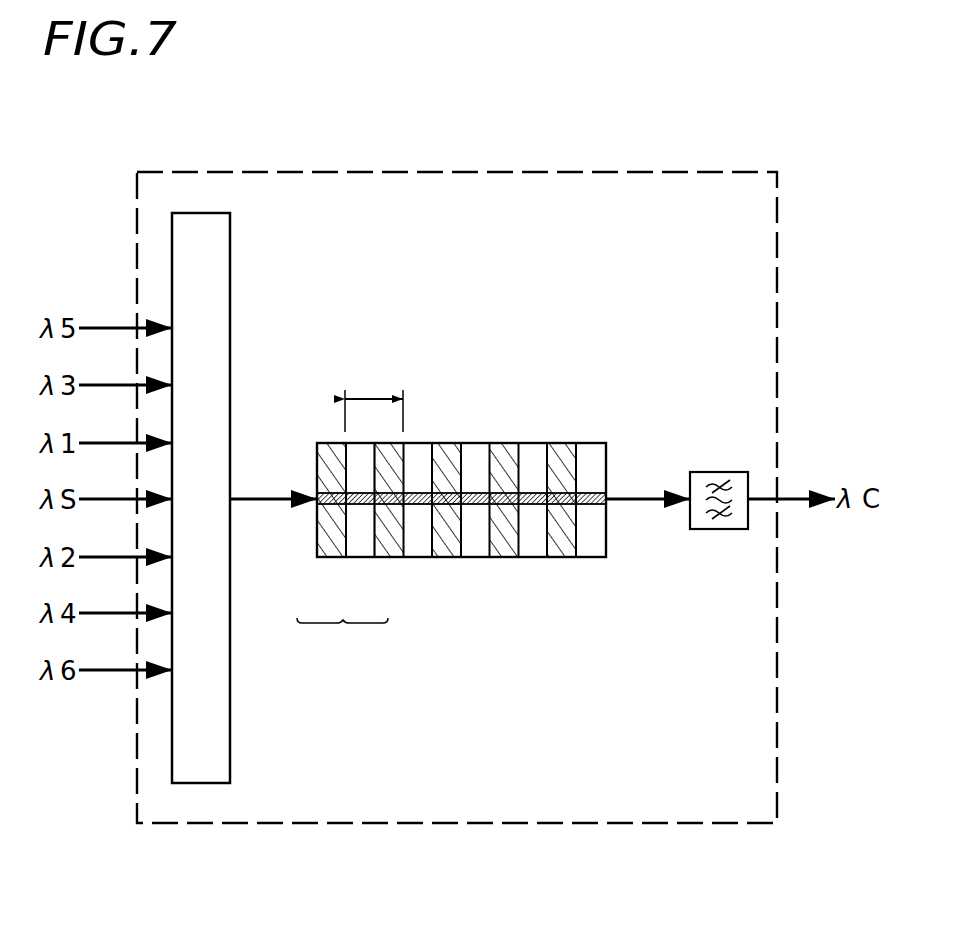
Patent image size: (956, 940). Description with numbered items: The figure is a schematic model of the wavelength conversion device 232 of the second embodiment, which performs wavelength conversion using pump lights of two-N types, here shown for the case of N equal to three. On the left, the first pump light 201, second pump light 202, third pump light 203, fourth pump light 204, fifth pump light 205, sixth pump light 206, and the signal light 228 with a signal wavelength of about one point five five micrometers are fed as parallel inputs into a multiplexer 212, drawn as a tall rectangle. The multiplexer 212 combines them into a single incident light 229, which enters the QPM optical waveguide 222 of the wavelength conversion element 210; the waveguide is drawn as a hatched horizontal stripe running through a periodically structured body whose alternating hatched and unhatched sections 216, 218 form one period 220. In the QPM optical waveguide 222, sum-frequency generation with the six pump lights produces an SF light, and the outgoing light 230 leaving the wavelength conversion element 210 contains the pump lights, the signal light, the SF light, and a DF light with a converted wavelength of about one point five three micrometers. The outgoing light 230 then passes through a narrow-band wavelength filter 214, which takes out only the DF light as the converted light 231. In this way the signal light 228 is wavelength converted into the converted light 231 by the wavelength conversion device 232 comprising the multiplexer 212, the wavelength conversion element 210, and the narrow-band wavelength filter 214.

The first pump light 201 is at (113, 441).
The second pump light 202 is at (113, 560).
The third pump light 203 is at (113, 383).
The fourth pump light 204 is at (113, 616).
The fifth pump light 205 is at (113, 326).
The sixth pump light 206 is at (113, 673).
The signal light 228 is at (113, 502).
The multiplexer 212 is at (230, 258).
The incident light 229 is at (285, 502).
The wavelength conversion element 210 is at (496, 508).
The first section of periodic structure 216 is at (328, 558).
The second section of periodic structure 218 is at (363, 558).
The period unit of grating 220 is at (342, 637).
The QPM optical waveguide 222 is at (368, 492).
The outgoing light 230 is at (627, 502).
The narrow-band wavelength filter 214 is at (720, 473).
The converted light 231 is at (783, 500).
The wavelength conversion device 232 is at (630, 173).